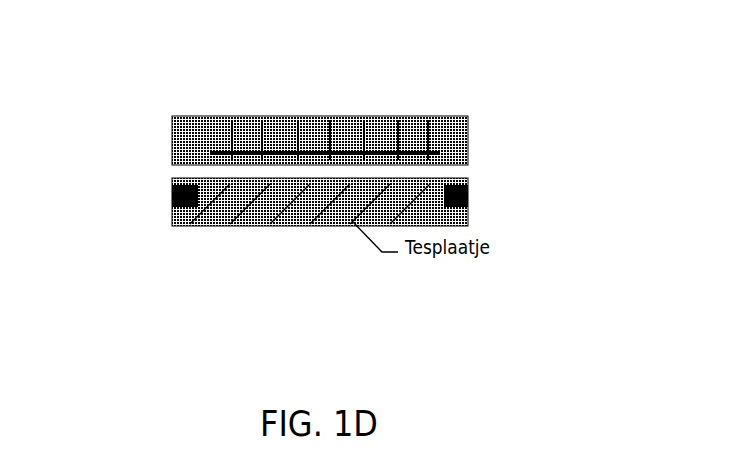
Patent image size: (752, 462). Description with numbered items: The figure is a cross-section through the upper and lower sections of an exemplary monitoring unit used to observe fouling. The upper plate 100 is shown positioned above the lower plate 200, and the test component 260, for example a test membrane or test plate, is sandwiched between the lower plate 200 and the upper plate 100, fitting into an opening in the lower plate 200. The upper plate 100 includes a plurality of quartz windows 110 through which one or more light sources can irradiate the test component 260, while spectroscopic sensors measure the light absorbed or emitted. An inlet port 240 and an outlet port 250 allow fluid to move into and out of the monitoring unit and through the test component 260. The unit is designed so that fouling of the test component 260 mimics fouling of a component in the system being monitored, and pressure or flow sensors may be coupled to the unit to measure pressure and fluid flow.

The upper plate 100 is at (468, 137).
The quartz windows 110 is at (410, 114).
The lower plate 200 is at (468, 216).
The inlet port 240 is at (468, 197).
The outlet port 250 is at (172, 200).
The test component 260 is at (244, 226).